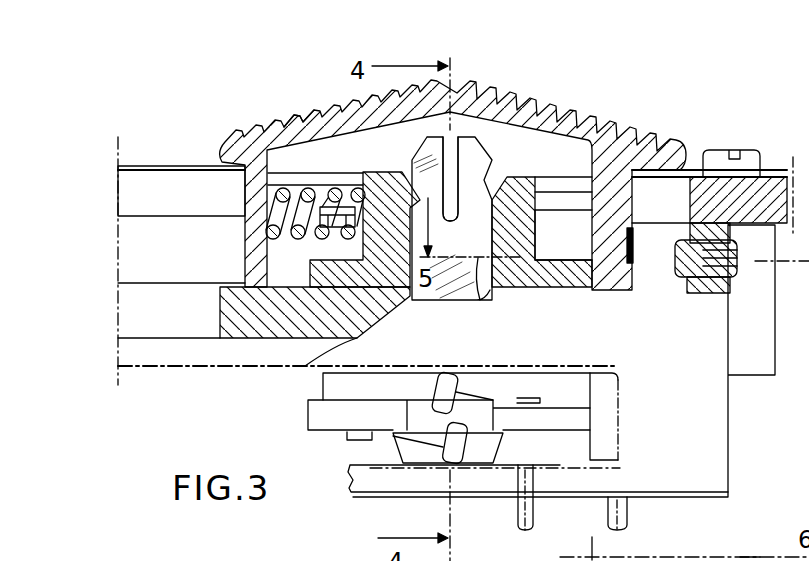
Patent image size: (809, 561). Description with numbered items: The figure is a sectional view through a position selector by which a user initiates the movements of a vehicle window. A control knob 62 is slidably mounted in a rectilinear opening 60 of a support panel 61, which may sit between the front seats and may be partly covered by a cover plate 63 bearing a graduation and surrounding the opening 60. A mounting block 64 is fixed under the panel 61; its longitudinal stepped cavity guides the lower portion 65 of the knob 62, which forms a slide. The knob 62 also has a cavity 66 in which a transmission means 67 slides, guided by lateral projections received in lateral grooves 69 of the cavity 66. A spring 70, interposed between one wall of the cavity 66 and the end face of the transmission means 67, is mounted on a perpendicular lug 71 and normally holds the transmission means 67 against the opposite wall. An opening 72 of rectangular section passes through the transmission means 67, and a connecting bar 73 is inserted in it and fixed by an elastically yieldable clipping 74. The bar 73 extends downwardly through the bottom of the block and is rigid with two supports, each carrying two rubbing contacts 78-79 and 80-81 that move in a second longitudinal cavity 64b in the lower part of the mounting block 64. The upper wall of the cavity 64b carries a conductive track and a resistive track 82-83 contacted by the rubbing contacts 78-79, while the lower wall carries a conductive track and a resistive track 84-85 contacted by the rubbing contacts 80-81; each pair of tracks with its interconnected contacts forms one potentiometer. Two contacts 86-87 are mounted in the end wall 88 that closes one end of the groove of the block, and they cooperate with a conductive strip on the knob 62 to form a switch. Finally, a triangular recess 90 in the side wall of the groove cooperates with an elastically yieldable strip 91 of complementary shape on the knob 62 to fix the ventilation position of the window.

The rectilinear opening 60 is at (168, 190).
The support panel 61 is at (768, 175).
The control knob 62 is at (603, 122).
The cover plate 63 is at (690, 176).
The mounting block 64 is at (708, 475).
The second longitudinal cavity 64b is at (600, 457).
The lower portion of the knob 65 is at (598, 234).
The cavity 66 is at (307, 118).
The transmission means 67 is at (515, 192).
The lateral grooves 69 is at (552, 192).
The spring 70 is at (270, 242).
The perpendicular lug 71 is at (335, 238).
The opening 72 is at (480, 300).
The connecting bar 73 is at (452, 218).
The elastically yieldable clipping 74 is at (493, 138).
The rubbing contacts 78-79 is at (458, 386).
The rubbing contacts 80-81 is at (467, 451).
The conductive track and resistive track 82-83 is at (503, 371).
The conductive track and resistive track 84-85 is at (458, 470).
The contacts 86-87 is at (680, 277).
The end wall 88 is at (700, 234).
The triangular recess 90 is at (673, 558).
The elastically yieldable strip 91 is at (742, 560).